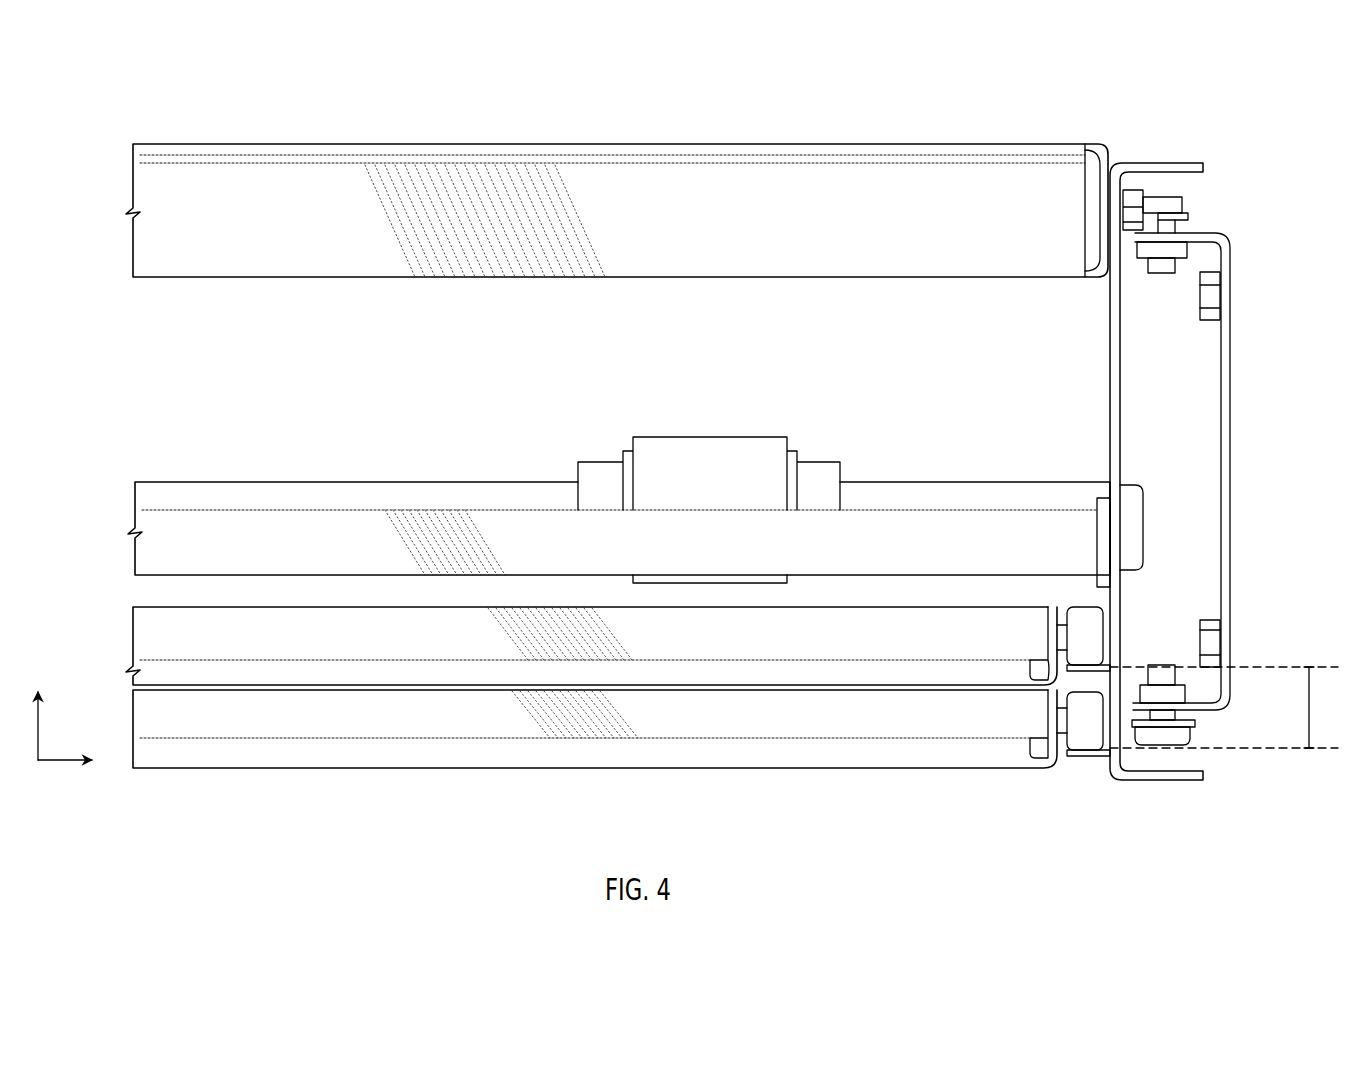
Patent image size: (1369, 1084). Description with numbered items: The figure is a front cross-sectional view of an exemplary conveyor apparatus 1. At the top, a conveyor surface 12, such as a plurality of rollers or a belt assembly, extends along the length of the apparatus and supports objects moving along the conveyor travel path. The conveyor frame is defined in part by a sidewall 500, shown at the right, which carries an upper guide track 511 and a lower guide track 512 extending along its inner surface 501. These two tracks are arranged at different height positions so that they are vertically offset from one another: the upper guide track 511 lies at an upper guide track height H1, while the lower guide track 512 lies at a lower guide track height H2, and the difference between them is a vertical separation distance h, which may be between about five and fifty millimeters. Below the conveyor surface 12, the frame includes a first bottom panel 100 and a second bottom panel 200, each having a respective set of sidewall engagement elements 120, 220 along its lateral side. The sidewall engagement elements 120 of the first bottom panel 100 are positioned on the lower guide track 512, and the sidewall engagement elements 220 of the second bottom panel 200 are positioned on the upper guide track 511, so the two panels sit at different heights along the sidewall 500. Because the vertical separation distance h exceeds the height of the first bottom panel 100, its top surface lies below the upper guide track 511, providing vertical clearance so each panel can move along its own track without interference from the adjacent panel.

The conveyor apparatus 1 is at (622, 818).
The conveyor surface 12 is at (720, 178).
The first bottom panel 100 is at (866, 727).
The sidewall engagement elements 120 is at (1076, 744).
The second bottom panel 200 is at (370, 652).
The sidewall engagement elements 220 is at (1081, 600).
The sidewall 500 is at (1126, 400).
The inner surface 501 is at (1110, 318).
The upper guide track 511 is at (1100, 662).
The lower guide track 512 is at (1098, 768).
The upper guide track height H1 is at (1239, 669).
The lower guide track height H2 is at (1239, 750).
The vertical separation distance h is at (1309, 708).